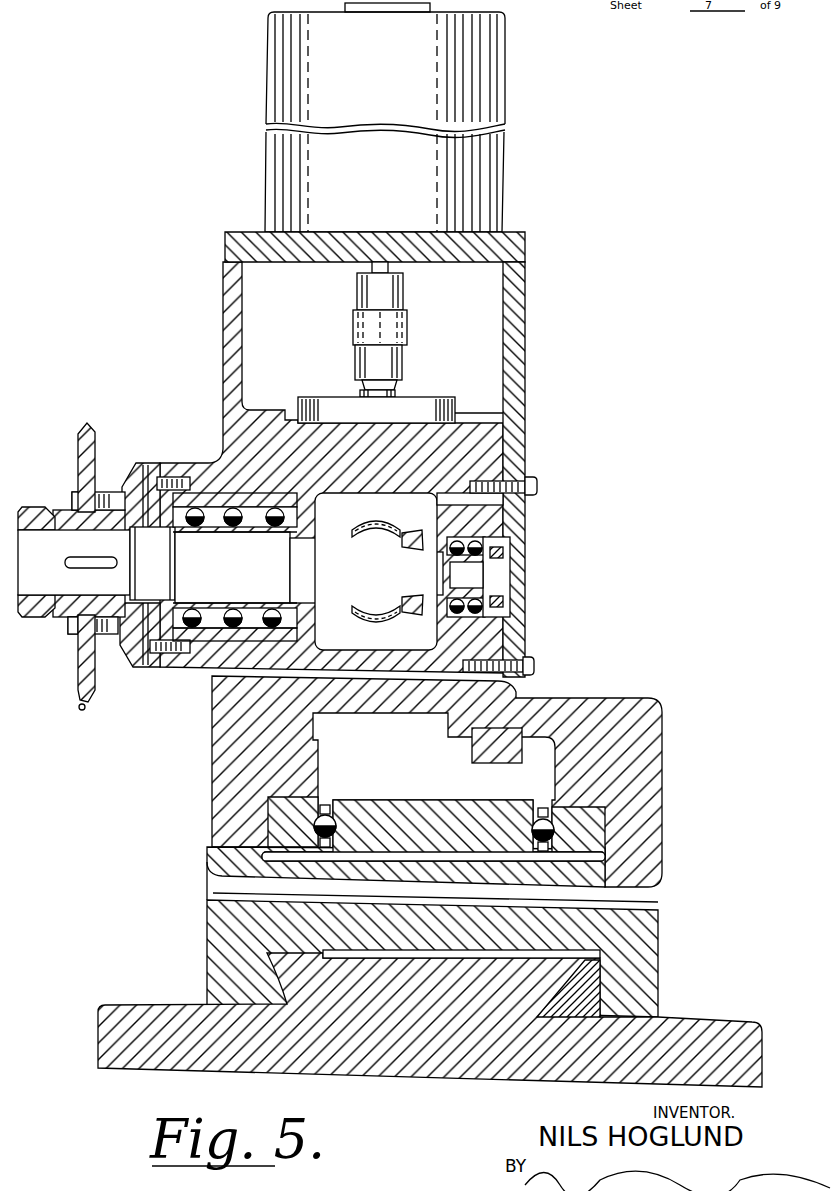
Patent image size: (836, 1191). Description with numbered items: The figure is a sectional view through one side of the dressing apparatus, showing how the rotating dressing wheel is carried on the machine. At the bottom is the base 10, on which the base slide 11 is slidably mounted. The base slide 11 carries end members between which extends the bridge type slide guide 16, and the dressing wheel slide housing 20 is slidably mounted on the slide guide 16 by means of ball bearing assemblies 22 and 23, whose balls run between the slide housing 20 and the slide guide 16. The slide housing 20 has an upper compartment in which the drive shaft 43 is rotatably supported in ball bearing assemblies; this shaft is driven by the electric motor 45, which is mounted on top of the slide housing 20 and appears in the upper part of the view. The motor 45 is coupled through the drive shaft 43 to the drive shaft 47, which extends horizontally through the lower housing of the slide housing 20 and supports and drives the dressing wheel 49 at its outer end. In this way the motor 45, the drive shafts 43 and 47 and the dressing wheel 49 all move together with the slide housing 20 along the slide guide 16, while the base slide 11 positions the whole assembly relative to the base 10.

The base 10 is at (723, 1033).
The base slide 11 is at (652, 961).
The bridge type slide guide 16 is at (427, 803).
The dressing wheel slide housing 20 is at (626, 703).
The ball bearing assembly 22 is at (340, 814).
The ball bearing assembly 23 is at (539, 820).
The drive shaft 43 is at (362, 506).
The electric motor 45 is at (503, 191).
The drive shaft 47 is at (434, 582).
The dressing wheel 49 is at (82, 708).